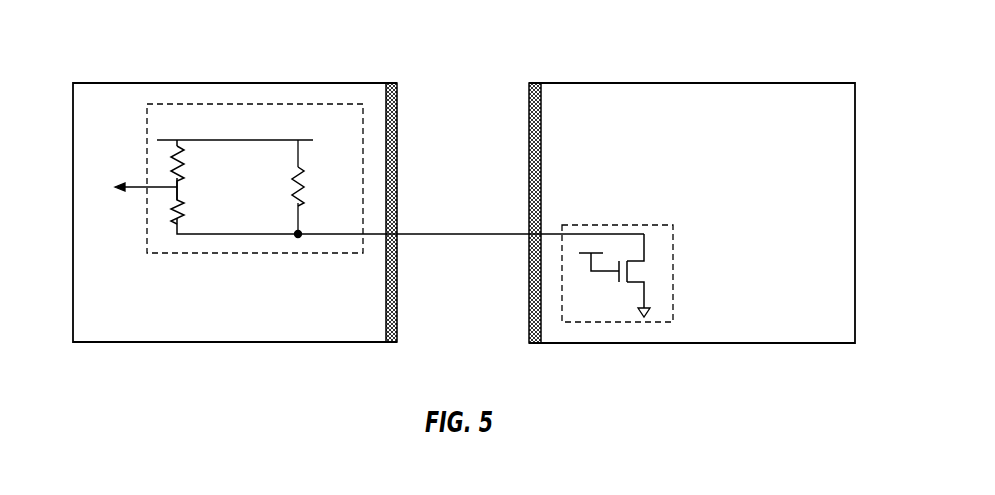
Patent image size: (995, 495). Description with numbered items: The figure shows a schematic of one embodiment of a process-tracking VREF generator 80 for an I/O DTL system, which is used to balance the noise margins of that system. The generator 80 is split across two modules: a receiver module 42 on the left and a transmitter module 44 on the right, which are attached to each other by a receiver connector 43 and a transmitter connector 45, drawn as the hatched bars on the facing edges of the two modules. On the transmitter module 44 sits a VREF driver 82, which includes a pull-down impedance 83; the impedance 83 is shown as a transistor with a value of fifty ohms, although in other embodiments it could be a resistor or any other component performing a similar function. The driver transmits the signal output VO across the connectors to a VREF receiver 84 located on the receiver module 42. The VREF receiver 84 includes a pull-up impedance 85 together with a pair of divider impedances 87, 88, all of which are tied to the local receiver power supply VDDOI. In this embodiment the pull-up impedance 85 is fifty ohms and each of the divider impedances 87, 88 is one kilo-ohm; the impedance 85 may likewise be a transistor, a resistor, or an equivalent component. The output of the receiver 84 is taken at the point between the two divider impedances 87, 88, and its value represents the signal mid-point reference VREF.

The process-tracking VREF generator 80 is at (692, 50).
The receiver module 42 is at (86, 316).
The receiver connector 43 is at (397, 133).
The transmitter module 44 is at (840, 318).
The transmitter connector 45 is at (529, 133).
The VREF driver 82 is at (663, 242).
The pull-down impedance 83 is at (630, 275).
The VREF receiver 84 is at (157, 120).
The pull-up impedance 85 is at (305, 186).
The divider impedance 87 is at (172, 168).
The divider impedance 88 is at (172, 207).